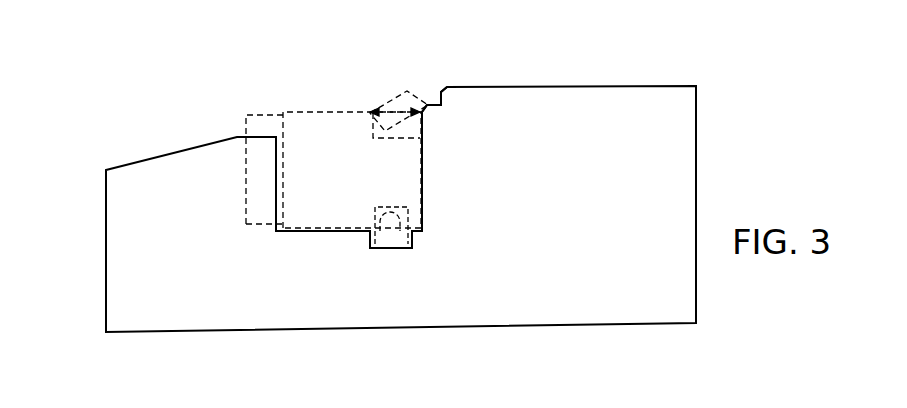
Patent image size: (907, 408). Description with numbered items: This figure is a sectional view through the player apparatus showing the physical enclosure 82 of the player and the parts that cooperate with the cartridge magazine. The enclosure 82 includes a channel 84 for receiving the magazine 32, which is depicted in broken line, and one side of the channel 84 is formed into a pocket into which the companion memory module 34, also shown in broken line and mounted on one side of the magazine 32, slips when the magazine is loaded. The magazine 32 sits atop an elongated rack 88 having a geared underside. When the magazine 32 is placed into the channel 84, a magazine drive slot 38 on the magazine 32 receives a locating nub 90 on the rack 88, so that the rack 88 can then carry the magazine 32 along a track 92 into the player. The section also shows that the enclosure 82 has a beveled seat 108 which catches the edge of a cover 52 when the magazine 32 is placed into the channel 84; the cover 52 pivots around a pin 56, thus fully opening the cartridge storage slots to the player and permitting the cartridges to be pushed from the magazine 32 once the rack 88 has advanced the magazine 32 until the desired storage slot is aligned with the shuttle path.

The enclosure 82 is at (602, 85).
The beveled seat 108 is at (441, 92).
The channel 84 is at (425, 188).
The memory module 34 is at (263, 114).
The magazine 32 is at (320, 112).
The pin 56 is at (370, 112).
The cover 52 is at (407, 90).
The magazine drive slot 38 is at (372, 213).
The locating nub 90 is at (391, 212).
The rack 88 is at (410, 236).
The track 92 is at (386, 250).